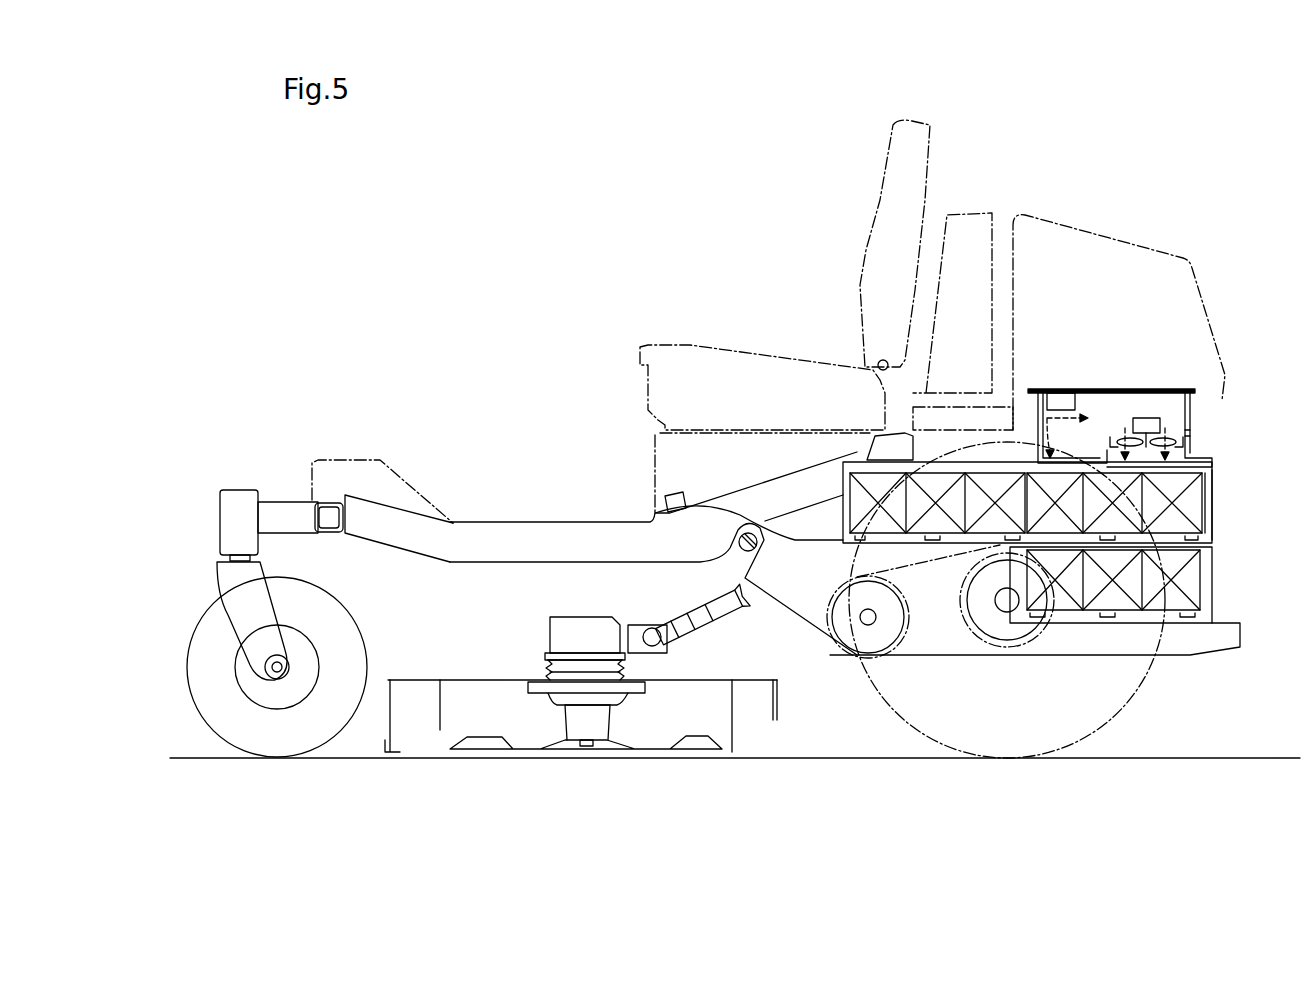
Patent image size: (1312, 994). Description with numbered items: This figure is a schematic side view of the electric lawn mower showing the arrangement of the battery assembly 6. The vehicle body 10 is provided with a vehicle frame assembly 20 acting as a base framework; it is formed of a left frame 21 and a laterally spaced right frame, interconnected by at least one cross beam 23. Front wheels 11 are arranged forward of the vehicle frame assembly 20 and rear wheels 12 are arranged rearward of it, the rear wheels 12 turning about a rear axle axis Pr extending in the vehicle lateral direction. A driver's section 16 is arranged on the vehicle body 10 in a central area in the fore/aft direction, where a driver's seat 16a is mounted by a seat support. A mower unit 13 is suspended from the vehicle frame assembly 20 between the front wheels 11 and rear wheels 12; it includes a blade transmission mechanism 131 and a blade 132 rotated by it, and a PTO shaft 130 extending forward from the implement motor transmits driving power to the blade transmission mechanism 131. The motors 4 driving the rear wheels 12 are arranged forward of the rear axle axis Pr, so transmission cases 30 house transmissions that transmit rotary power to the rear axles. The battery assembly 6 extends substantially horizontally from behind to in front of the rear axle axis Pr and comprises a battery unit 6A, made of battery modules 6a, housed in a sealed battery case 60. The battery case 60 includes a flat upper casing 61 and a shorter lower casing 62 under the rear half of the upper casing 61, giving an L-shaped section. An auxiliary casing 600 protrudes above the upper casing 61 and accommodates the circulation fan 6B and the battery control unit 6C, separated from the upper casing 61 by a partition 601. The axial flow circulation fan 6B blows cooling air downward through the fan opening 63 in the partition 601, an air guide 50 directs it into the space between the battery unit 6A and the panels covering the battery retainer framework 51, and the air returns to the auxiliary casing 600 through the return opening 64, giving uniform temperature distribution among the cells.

The driver's section 16 is at (620, 193).
The driver's seat 16a is at (697, 348).
The vehicle body 10 is at (368, 497).
The vehicle frame assembly 20 is at (754, 553).
The cross beam 23 is at (325, 502).
The left frame 21 is at (500, 548).
The front wheels 11 is at (279, 760).
The mower unit 13 is at (455, 670).
The blade transmission mechanism 131 is at (588, 620).
The blade 132 is at (555, 752).
The PTO shaft 130 is at (710, 616).
The battery assembly 6 is at (893, 456).
The battery case 60 is at (1040, 519).
The upper casing 61 is at (940, 462).
The lower casing 62 is at (1172, 625).
The battery module 6a is at (855, 520).
The battery unit 6A is at (1128, 618).
The auxiliary casing 600 is at (1190, 412).
The return opening 64 is at (1058, 380).
The battery control unit 6C is at (1068, 390).
The partition 601 is at (1097, 455).
The circulation fan 6B is at (1147, 415).
The battery retainer framework 51 is at (1192, 440).
The air guide 50 is at (1215, 480).
The fan opening 63 is at (1210, 525).
The motors 4 is at (857, 652).
The transmission case 30 is at (930, 658).
The rear axle axis Pr is at (1007, 603).
The rear wheels 12 is at (1070, 745).